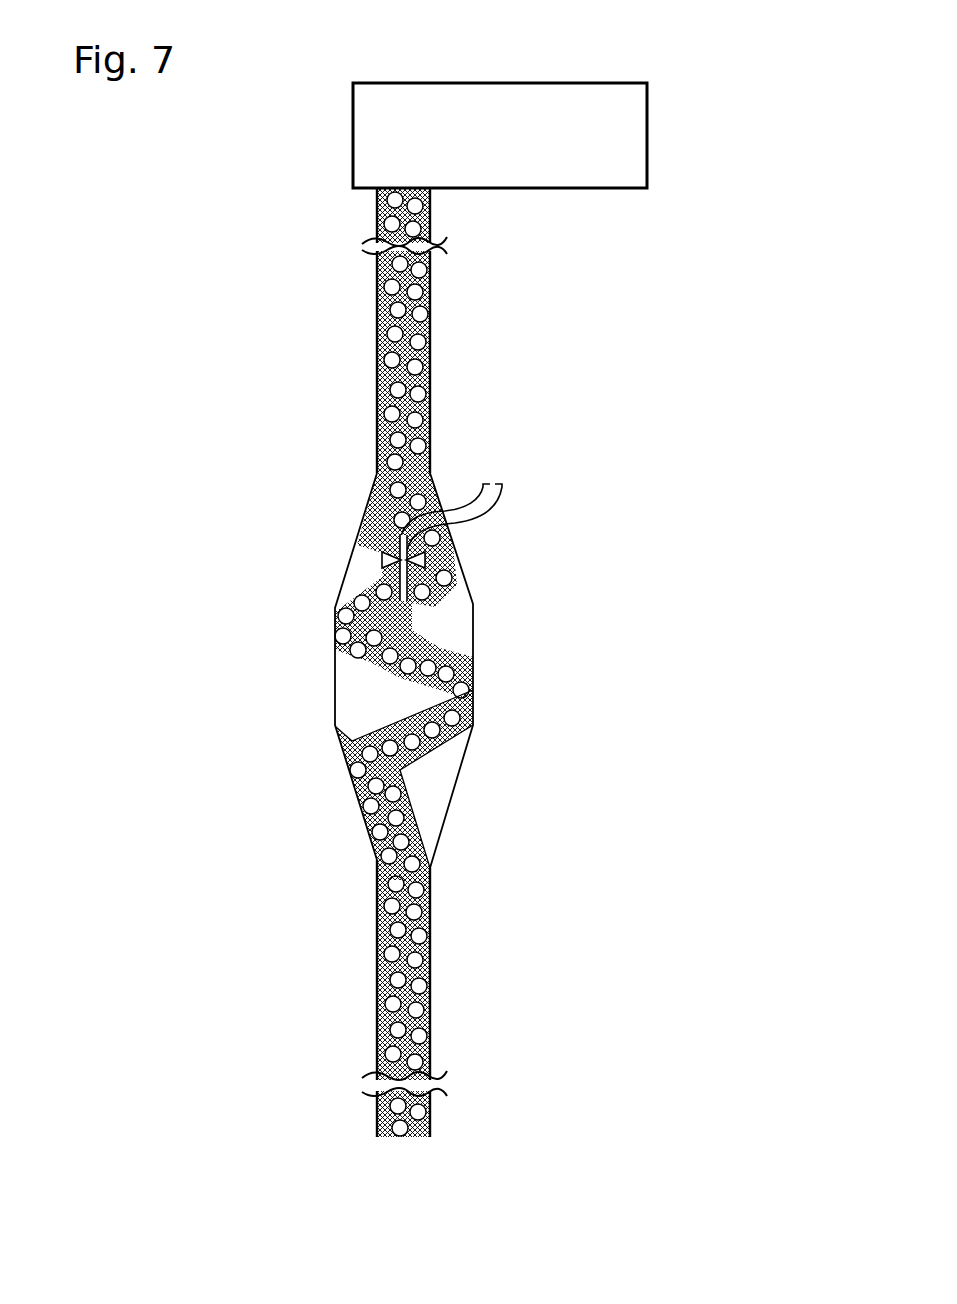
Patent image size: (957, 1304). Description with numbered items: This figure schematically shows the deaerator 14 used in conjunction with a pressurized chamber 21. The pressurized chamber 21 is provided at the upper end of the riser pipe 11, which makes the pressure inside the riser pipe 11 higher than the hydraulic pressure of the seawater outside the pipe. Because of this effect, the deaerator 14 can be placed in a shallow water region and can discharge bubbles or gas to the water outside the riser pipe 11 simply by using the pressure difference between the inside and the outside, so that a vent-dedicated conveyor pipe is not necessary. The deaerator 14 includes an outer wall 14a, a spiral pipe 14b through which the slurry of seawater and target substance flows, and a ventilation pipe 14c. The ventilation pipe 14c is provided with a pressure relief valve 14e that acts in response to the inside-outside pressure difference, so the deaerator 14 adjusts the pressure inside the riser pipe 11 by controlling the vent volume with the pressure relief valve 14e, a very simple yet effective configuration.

The pressurized chamber 21 is at (647, 145).
The riser pipe 11 is at (375, 323).
The deaerator 14 is at (410, 676).
The outer wall 14a is at (465, 657).
The spiral pipe 14b is at (422, 749).
The ventilation pipe 14c is at (410, 596).
The pressure relief valve 14e is at (384, 556).